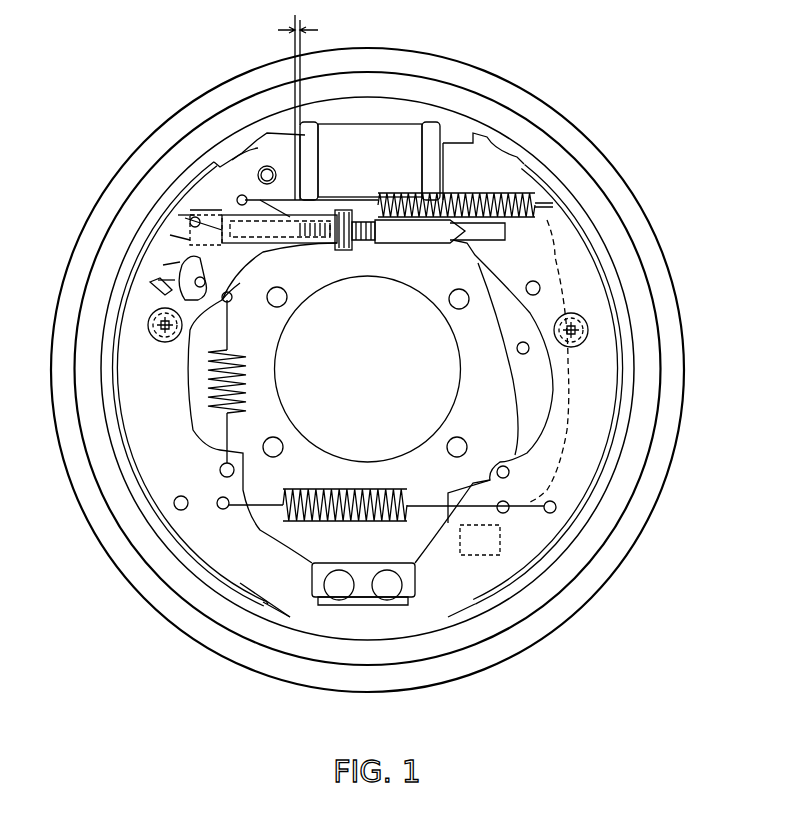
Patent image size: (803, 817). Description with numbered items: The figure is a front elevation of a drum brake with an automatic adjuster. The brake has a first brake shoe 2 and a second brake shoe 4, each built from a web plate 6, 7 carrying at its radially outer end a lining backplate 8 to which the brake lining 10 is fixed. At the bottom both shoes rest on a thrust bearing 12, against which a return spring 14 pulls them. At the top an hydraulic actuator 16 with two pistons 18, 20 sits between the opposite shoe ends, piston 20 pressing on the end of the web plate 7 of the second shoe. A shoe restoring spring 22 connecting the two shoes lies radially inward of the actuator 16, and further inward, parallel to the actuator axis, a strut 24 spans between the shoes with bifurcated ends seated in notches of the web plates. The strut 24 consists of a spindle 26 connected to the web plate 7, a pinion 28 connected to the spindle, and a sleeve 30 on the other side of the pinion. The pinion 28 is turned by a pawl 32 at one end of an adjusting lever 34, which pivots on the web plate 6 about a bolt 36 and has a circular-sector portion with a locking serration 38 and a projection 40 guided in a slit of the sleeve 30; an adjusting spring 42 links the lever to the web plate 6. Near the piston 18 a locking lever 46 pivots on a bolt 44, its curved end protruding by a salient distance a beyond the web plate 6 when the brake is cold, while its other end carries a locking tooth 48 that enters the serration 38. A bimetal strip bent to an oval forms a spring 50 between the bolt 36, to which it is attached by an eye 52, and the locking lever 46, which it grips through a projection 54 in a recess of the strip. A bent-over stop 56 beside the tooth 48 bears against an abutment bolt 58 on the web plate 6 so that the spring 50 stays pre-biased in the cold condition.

The first brake shoe 2 is at (225, 375).
The second brake shoe 4 is at (519, 375).
The web plate 6 is at (212, 582).
The web plate 7 is at (515, 555).
The lining backplate 8 is at (126, 532).
The brake lining 10 is at (120, 468).
The thrust bearing 12 is at (358, 605).
The return spring 14 is at (350, 523).
The hydraulic actuator 16 is at (402, 133).
The piston 18 is at (307, 140).
The piston 20 is at (450, 140).
The shoe restoring spring 22 is at (505, 192).
The strut 24 is at (406, 259).
The spindle 26 is at (432, 245).
The pinion 28 is at (345, 250).
The sleeve 30 is at (317, 247).
The pawl 32 is at (347, 207).
The adjusting lever 34 is at (203, 150).
The bolt 36 is at (175, 300).
The locking serration 38 is at (165, 250).
The projection 40 is at (190, 187).
The adjusting spring 42 is at (210, 400).
The bolt 44 is at (243, 175).
The locking lever 46 is at (227, 147).
The locking tooth 48 is at (165, 290).
The spring 50 is at (178, 215).
The eye 52 is at (205, 363).
The projection 54 is at (170, 235).
The stop 56 is at (163, 265).
The abutment bolt 58 is at (158, 280).
The salient distance a is at (298, 17).